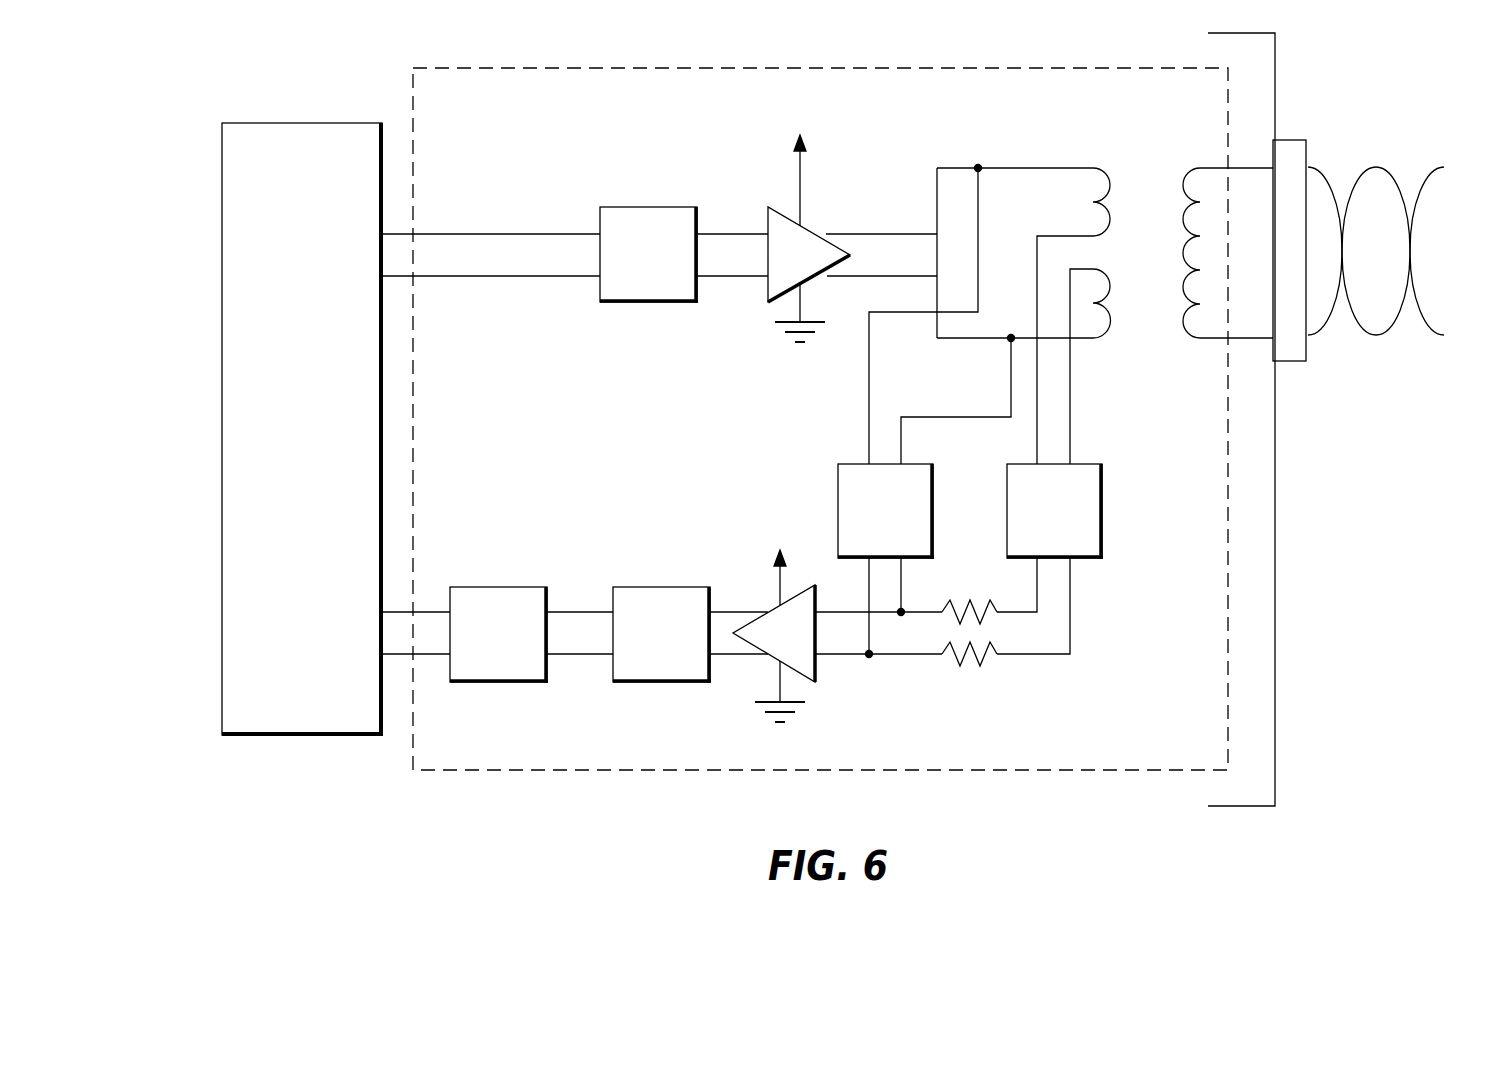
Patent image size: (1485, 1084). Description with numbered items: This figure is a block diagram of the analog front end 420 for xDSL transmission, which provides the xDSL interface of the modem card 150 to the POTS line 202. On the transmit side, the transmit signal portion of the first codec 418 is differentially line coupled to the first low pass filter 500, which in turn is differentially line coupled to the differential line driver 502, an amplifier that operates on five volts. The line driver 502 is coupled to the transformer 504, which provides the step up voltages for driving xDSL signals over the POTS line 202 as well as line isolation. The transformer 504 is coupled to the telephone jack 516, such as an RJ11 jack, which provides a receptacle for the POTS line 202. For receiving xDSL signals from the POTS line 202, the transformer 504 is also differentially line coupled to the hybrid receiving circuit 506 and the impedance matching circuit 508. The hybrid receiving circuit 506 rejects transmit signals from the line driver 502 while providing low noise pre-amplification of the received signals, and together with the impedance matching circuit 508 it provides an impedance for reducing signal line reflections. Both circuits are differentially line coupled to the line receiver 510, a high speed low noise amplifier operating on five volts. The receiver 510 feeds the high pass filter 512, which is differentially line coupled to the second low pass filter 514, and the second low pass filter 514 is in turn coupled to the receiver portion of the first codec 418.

The analog front end 420 is at (512, 70).
The first codec 418 is at (288, 737).
The first low pass filter 500 is at (627, 304).
The differential line driver 502 is at (778, 267).
The transformer 504 is at (1180, 218).
The hybrid receiving circuit 506 is at (838, 492).
The impedance matching circuit 508 is at (1103, 536).
The line receiver 510 is at (763, 644).
The high pass filter 512 is at (630, 684).
The second low pass filter 514 is at (503, 684).
The telephone jack 516 is at (1290, 362).
The POTS line 202 is at (1313, 163).
The modem card 150 is at (1276, 714).